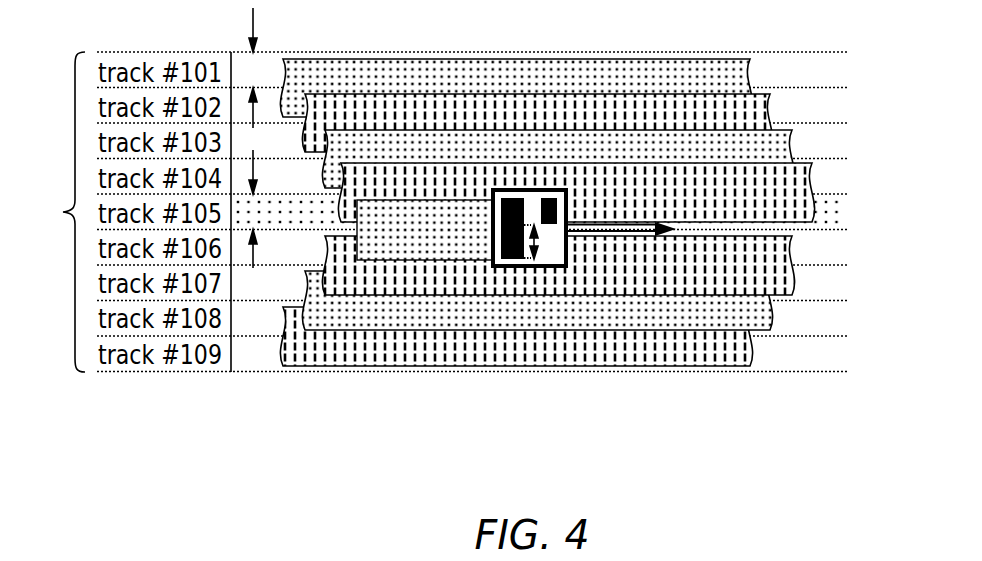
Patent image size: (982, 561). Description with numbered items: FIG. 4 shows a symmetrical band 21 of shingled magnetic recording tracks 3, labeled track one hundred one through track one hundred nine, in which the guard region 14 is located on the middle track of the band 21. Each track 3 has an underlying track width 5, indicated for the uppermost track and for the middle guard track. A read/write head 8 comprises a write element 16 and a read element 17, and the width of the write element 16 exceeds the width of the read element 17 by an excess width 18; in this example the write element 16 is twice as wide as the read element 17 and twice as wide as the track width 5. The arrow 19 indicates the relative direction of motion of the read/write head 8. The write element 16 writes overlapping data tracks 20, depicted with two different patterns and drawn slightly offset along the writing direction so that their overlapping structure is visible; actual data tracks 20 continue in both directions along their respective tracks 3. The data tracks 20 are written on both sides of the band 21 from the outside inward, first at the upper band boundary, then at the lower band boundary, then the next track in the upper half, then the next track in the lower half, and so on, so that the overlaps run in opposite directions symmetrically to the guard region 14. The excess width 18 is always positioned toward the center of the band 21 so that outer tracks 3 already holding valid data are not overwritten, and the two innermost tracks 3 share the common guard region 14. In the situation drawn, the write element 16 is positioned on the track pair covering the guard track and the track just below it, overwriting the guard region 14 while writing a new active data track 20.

The track 3 is at (547, 235).
The track width 5 is at (264, 137).
The read/write head 8 is at (552, 258).
The guard region 14 is at (287, 212).
The write element 16 is at (541, 314).
The read element 17 is at (557, 210).
The excess width 18 is at (537, 240).
The arrow 19 is at (640, 233).
The data track 20 is at (503, 73).
The symmetrical band 21 is at (54, 212).